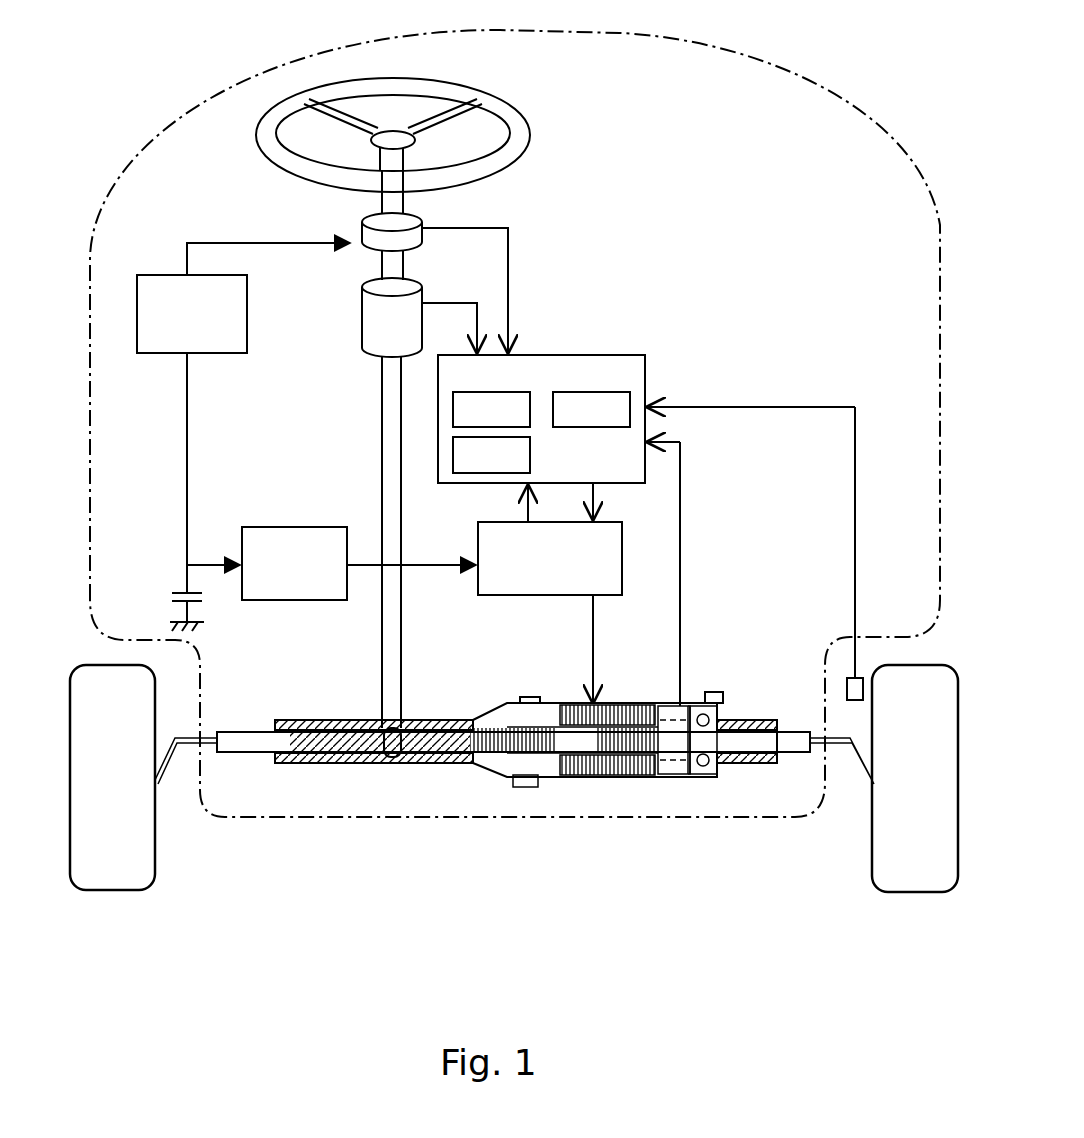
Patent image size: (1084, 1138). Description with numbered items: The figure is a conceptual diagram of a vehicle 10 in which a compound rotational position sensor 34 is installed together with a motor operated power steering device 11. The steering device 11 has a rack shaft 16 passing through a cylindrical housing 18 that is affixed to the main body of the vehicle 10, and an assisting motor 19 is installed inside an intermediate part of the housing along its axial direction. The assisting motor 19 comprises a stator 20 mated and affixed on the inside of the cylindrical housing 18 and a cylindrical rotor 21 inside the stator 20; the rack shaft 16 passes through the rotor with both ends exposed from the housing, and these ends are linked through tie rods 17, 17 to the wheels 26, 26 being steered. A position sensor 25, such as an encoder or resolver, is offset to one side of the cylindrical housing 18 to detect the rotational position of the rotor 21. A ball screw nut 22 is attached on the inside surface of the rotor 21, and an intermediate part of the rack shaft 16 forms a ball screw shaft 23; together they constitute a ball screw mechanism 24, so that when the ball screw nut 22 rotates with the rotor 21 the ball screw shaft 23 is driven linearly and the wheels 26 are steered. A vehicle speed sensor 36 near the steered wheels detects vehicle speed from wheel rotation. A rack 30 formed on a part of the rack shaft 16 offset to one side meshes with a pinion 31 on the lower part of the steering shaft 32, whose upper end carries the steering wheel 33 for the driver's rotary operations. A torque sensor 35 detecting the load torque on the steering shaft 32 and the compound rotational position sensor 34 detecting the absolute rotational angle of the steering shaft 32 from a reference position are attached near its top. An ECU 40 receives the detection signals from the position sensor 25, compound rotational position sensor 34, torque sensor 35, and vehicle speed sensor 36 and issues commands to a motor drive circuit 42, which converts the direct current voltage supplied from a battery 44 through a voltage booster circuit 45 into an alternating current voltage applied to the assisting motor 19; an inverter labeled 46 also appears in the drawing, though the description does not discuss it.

The vehicle 10 is at (792, 70).
The motor operated power steering device 11 is at (513, 818).
The rack shaft 16 is at (448, 752).
The tie rods 17 is at (197, 742).
The cylindrical housing 18 is at (770, 772).
The assisting motor 19 is at (579, 825).
The stator 20 is at (610, 780).
The rotor 21 is at (640, 780).
The ball screw nut 22 is at (553, 780).
The ball screw shaft 23 is at (510, 785).
The ball screw mechanism 24 is at (567, 822).
The position sensor 25 is at (675, 775).
The wheels 26 is at (114, 880).
The rack 30 is at (345, 748).
The pinion 31 is at (395, 690).
The steering shaft 32 is at (405, 760).
The steering wheel 33 is at (530, 112).
The compound rotational position sensor 34 is at (360, 233).
The torque sensor 35 is at (372, 322).
The vehicle speed sensor 36 is at (847, 690).
The ECU 40 is at (640, 355).
The motor drive circuit 42 is at (520, 595).
The battery 44 is at (172, 603).
The voltage booster circuit 45 is at (242, 540).
The inverter 46 is at (137, 340).